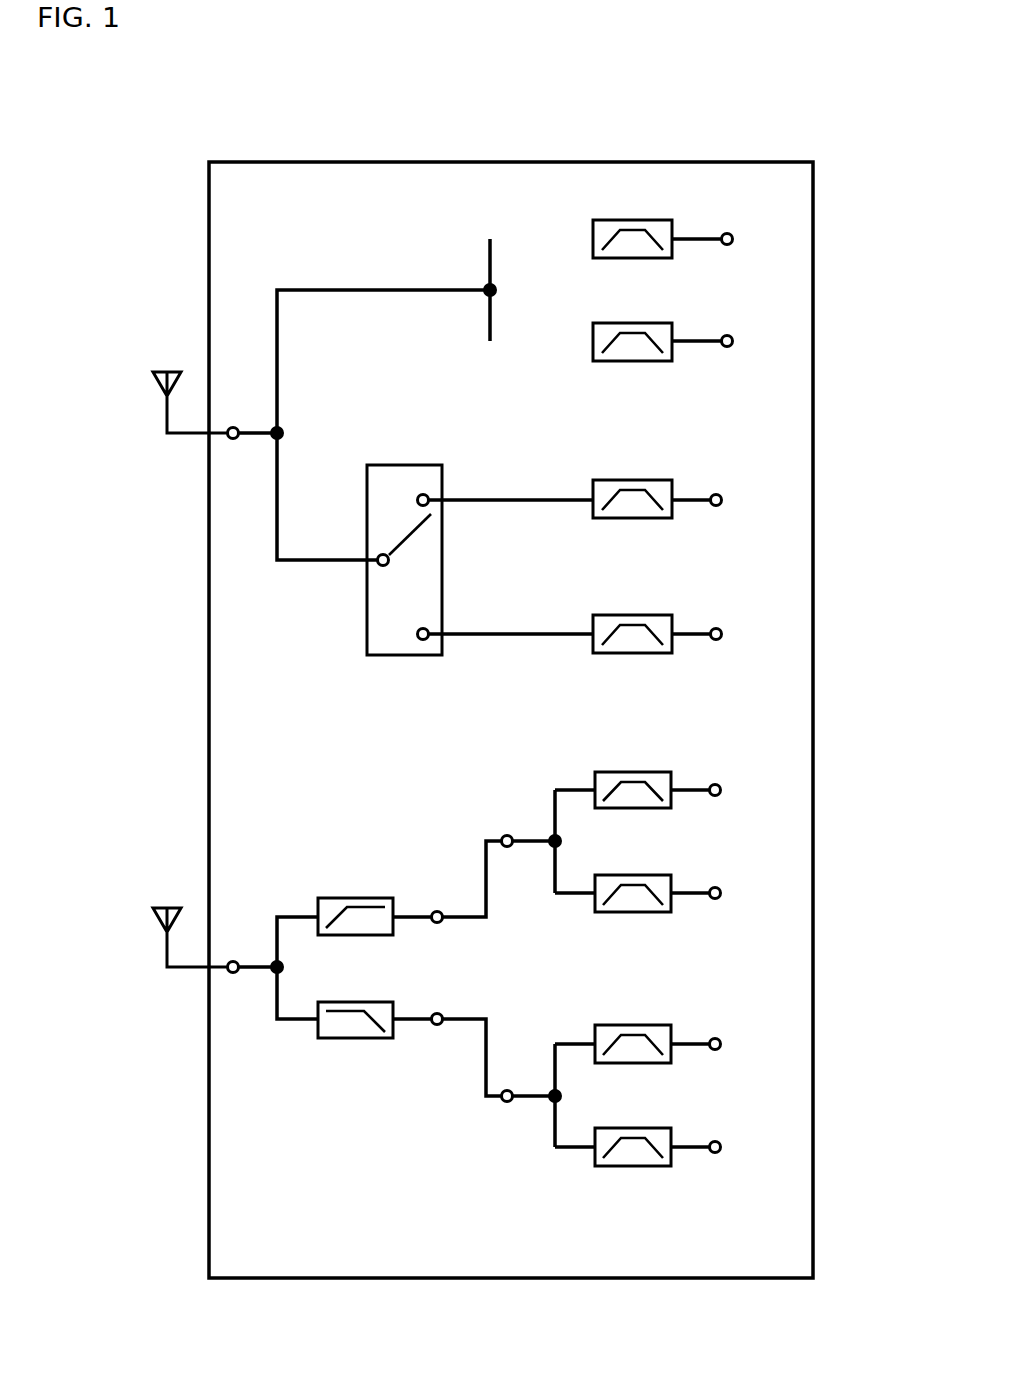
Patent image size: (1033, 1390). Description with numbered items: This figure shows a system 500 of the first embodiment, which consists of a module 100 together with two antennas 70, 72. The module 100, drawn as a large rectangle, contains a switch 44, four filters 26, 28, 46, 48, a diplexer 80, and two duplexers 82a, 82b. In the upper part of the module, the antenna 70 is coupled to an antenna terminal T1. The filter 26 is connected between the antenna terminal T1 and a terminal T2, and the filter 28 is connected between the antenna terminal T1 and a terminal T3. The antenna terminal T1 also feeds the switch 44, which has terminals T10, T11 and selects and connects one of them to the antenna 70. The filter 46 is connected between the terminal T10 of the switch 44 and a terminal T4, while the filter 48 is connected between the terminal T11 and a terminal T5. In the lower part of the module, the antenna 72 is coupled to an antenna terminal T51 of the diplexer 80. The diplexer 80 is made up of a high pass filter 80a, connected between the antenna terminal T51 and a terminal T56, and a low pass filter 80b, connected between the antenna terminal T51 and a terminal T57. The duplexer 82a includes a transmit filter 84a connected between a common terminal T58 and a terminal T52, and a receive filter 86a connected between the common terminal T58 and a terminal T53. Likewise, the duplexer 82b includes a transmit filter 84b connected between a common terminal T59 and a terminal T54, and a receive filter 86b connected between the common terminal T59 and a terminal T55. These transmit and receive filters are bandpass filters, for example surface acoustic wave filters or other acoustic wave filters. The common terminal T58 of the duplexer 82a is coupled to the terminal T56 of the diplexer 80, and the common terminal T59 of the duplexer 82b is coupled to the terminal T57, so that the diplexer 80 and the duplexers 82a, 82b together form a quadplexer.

The system 500 is at (772, 123).
The module 100 is at (500, 161).
The antenna 70 is at (171, 371).
The antenna 72 is at (171, 907).
The filter 26 is at (653, 219).
The filter 28 is at (653, 322).
The switch 44 is at (400, 656).
The filter 46 is at (654, 479).
The filter 48 is at (654, 614).
The diplexer 80 is at (312, 1020).
The High Pass Filter 80a is at (318, 924).
The Low Pass Filter 80b is at (318, 1027).
The duplexer 82a is at (594, 890).
The duplexer 82b is at (594, 1144).
The transmit filter 84a is at (595, 792).
The receive filter 86a is at (595, 896).
The transmit filter 84b is at (595, 1046).
The receive filter 86b is at (595, 1150).
The antenna terminal T1 is at (233, 426).
The terminal T2 is at (733, 239).
The terminal T3 is at (733, 341).
The terminal T4 is at (722, 500).
The terminal T5 is at (722, 634).
The terminal T10 is at (412, 486).
The terminal T11 is at (412, 621).
The antenna terminal T51 is at (233, 960).
The terminal T52 is at (721, 790).
The terminal T53 is at (721, 893).
The terminal T54 is at (721, 1044).
The terminal T55 is at (721, 1147).
The terminal T56 is at (437, 910).
The terminal T57 is at (437, 1012).
The common terminal T58 is at (507, 834).
The common terminal T59 is at (507, 1089).